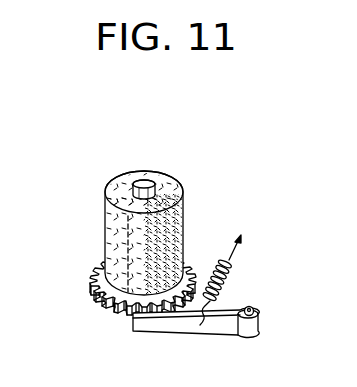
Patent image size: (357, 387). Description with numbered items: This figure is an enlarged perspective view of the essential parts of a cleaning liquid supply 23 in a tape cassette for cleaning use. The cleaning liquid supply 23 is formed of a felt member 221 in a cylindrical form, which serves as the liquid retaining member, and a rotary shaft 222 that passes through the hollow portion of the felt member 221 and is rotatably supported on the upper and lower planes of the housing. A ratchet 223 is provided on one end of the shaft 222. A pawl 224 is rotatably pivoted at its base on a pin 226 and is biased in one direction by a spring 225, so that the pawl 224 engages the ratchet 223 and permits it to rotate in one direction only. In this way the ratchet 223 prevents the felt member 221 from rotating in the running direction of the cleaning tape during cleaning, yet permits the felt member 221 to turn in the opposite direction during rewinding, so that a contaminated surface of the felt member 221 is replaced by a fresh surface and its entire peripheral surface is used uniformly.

The cleaning liquid supply 23 is at (93, 168).
The felt member 221 is at (112, 228).
The rotary shaft 222 is at (148, 181).
The ratchet 223 is at (105, 305).
The pawl 224 is at (170, 323).
The spring 225 is at (233, 276).
The pin 226 is at (251, 307).